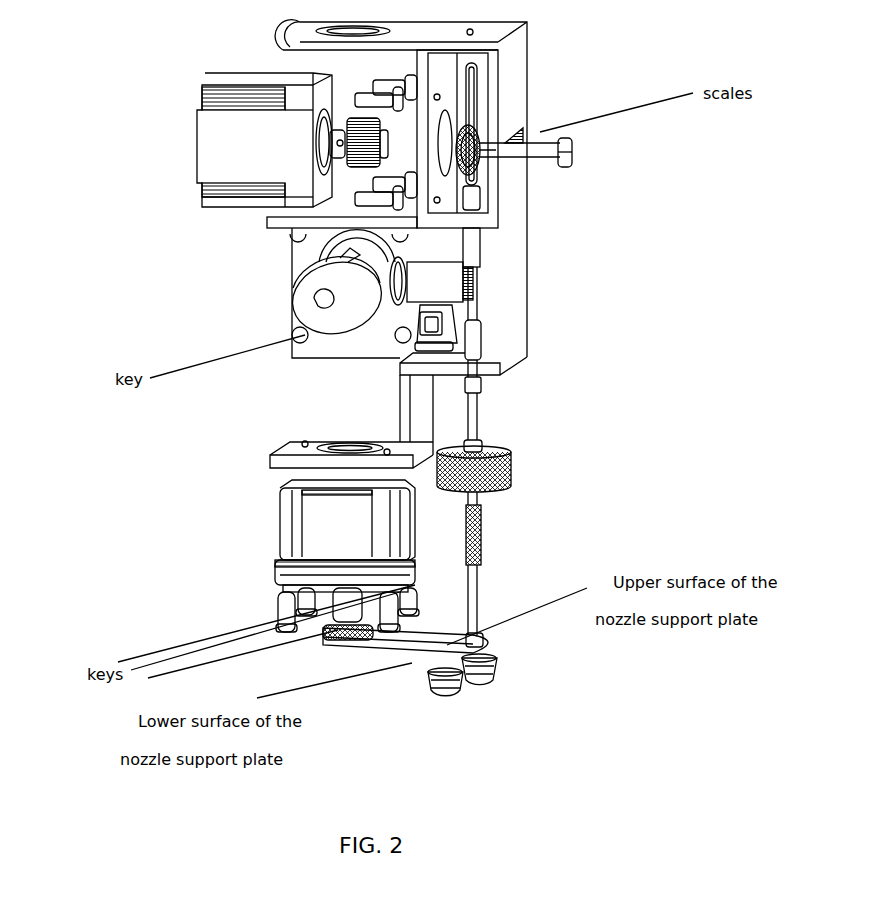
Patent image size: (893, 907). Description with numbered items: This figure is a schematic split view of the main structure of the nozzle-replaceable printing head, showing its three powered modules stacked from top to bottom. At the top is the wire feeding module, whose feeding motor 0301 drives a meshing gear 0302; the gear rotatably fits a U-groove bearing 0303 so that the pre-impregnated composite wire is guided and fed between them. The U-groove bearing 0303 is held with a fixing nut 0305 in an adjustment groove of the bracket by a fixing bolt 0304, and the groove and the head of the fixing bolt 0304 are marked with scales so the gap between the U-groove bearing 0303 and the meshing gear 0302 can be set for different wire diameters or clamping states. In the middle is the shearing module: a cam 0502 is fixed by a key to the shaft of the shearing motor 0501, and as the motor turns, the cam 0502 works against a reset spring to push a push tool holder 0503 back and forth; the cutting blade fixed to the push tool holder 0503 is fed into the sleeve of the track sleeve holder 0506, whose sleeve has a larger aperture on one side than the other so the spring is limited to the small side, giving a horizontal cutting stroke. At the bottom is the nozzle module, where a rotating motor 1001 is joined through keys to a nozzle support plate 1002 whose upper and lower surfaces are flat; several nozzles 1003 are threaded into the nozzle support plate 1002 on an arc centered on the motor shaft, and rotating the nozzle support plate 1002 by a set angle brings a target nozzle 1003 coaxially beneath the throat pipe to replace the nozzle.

The feeding motor 0301 is at (193, 138).
The meshing gear 0302 is at (313, 118).
The U-groove bearing 0303 is at (473, 168).
The fixing bolt 0304 is at (574, 143).
The fixing nut 0305 is at (482, 151).
The shearing motor 0501 is at (360, 257).
The cam 0502 is at (292, 302).
The push tool holder 0503 is at (405, 279).
The track sleeve holder 0506 is at (455, 336).
The rotating motor 1001 is at (287, 522).
The nozzle support plate 1002 is at (298, 613).
The nozzles 1003 is at (497, 665).